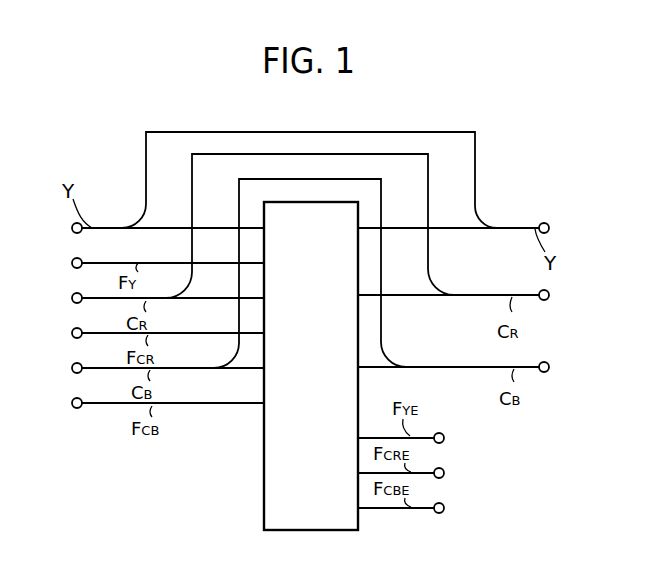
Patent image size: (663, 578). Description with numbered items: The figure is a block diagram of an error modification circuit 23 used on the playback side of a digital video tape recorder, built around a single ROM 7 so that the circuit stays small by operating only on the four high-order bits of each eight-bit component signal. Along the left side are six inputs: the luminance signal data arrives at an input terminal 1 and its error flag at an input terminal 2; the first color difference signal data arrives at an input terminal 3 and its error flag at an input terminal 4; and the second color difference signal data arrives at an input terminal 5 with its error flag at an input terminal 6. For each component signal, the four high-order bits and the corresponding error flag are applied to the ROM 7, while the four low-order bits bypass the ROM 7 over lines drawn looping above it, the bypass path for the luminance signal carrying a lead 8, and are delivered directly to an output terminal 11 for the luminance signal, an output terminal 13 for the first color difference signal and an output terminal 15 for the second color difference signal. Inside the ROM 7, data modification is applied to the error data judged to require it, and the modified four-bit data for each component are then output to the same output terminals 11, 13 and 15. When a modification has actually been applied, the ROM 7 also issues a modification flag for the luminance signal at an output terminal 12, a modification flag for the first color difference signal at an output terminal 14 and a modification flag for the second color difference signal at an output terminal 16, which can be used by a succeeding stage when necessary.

The input terminal 1 is at (73, 233).
The input terminal 2 is at (73, 268).
The input terminal 3 is at (73, 303).
The input terminal 4 is at (73, 338).
The input terminal 5 is at (73, 373).
The input terminal 6 is at (73, 408).
The ROM 7 is at (264, 475).
The lead line 8 is at (107, 227).
The output terminal 11 is at (549, 228).
The output terminal 12 is at (444, 438).
The output terminal 13 is at (549, 295).
The output terminal 14 is at (444, 473).
The output terminal 15 is at (549, 367).
The output terminal 16 is at (444, 508).
The error modification circuit 23 is at (212, 441).